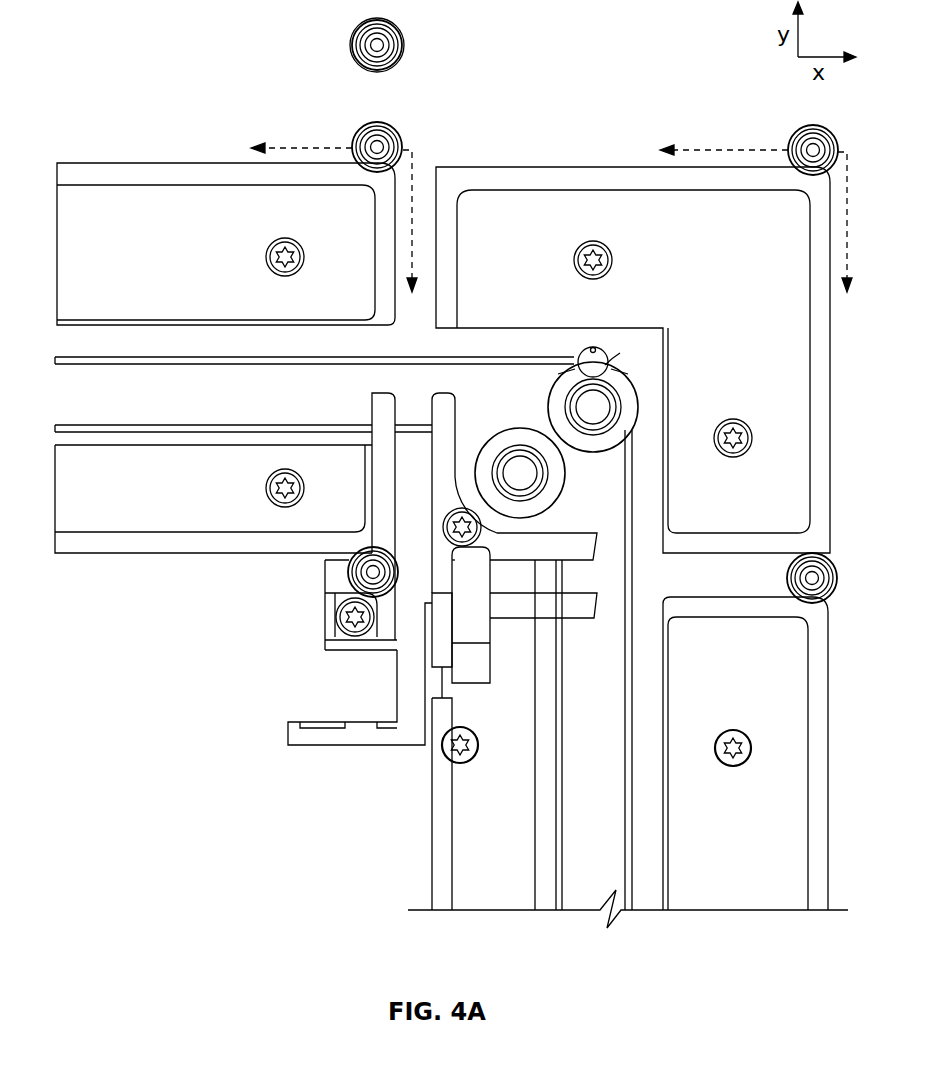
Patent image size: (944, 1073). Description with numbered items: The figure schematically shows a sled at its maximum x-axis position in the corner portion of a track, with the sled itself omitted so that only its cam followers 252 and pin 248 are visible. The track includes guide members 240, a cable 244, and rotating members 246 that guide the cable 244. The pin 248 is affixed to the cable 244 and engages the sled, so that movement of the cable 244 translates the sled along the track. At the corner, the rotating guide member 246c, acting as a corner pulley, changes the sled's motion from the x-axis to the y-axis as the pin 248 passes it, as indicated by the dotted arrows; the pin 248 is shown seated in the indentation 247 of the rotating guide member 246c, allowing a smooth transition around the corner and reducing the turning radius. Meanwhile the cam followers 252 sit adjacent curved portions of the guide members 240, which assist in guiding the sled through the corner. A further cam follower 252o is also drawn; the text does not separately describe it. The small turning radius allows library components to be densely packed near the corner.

The guide member 240 is at (183, 165).
The cable 244 is at (185, 366).
The rotating member 246 is at (521, 435).
The rotating guide member 246c is at (634, 401).
The indentation 247 is at (622, 351).
The pin 248 is at (584, 351).
The cam follower 252 is at (355, 135).
The roller outer position 252o is at (401, 42).